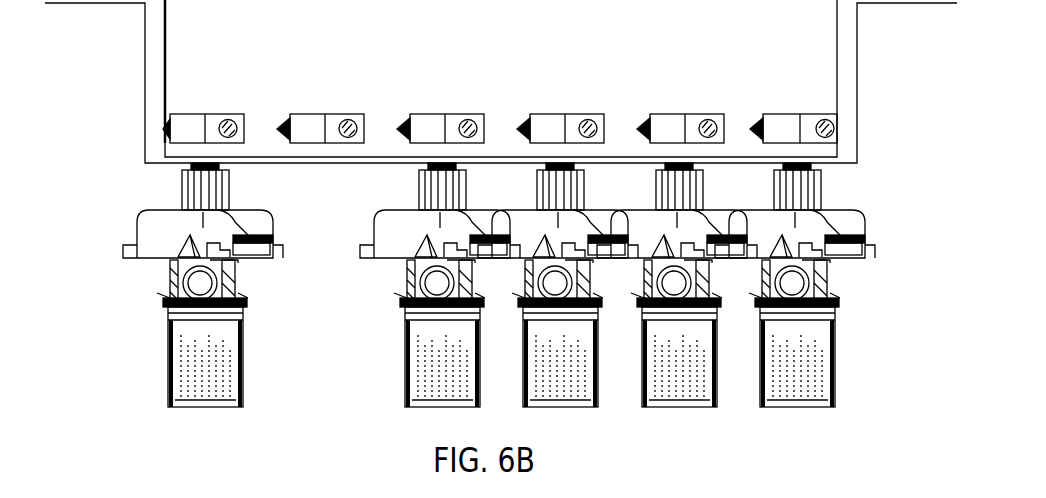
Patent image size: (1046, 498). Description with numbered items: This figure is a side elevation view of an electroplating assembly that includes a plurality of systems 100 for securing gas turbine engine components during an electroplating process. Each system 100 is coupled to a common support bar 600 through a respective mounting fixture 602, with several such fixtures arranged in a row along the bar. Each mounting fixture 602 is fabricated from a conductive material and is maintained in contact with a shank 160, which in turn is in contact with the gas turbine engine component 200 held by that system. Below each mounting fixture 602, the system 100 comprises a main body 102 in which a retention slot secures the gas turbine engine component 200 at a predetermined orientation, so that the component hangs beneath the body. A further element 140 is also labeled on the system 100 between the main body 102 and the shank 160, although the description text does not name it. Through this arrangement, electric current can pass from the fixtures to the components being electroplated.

The support bar 600 is at (165, 40).
The mounting fixture 602 is at (812, 112).
The system 100 is at (501, 285).
The main body 102 is at (152, 227).
The connector stem 140 is at (192, 192).
The shank 160 is at (217, 167).
The gas turbine engine component 200 is at (182, 332).